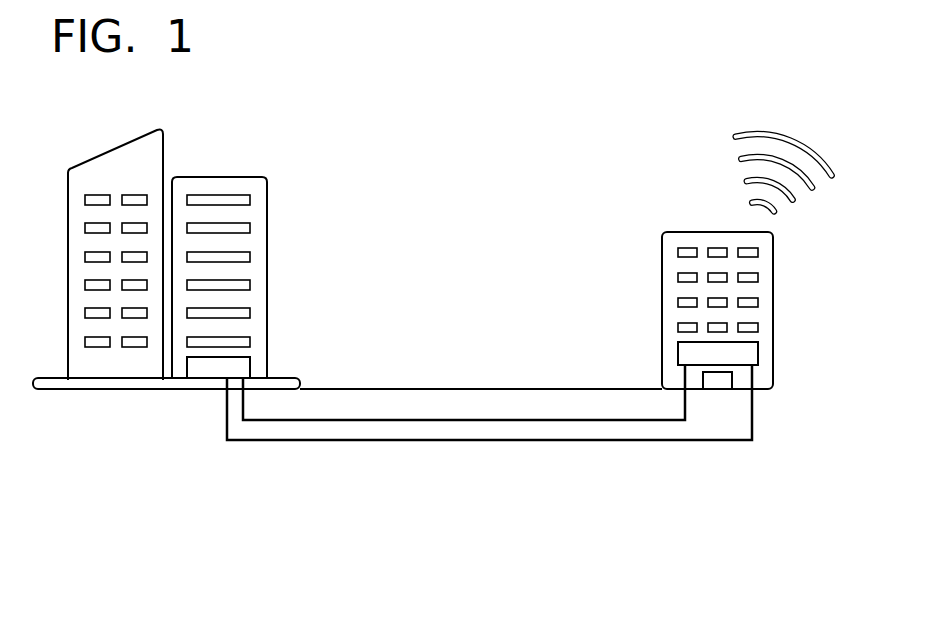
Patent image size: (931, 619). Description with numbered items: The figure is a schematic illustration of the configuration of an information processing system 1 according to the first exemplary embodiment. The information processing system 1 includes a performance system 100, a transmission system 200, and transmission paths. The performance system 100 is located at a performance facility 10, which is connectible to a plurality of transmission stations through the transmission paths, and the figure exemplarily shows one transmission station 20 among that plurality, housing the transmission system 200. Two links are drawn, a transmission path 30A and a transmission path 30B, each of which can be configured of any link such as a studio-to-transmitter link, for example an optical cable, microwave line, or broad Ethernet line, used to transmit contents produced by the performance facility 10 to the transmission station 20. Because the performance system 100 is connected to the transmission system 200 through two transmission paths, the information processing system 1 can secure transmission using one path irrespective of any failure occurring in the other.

The information processing system 1 is at (484, 116).
The performance facility 10 is at (232, 177).
The transmission station 20 is at (683, 232).
The performance system 100 is at (250, 367).
The transmission system 200 is at (678, 355).
The transmission path 30A is at (467, 420).
The transmission path 30B is at (470, 443).